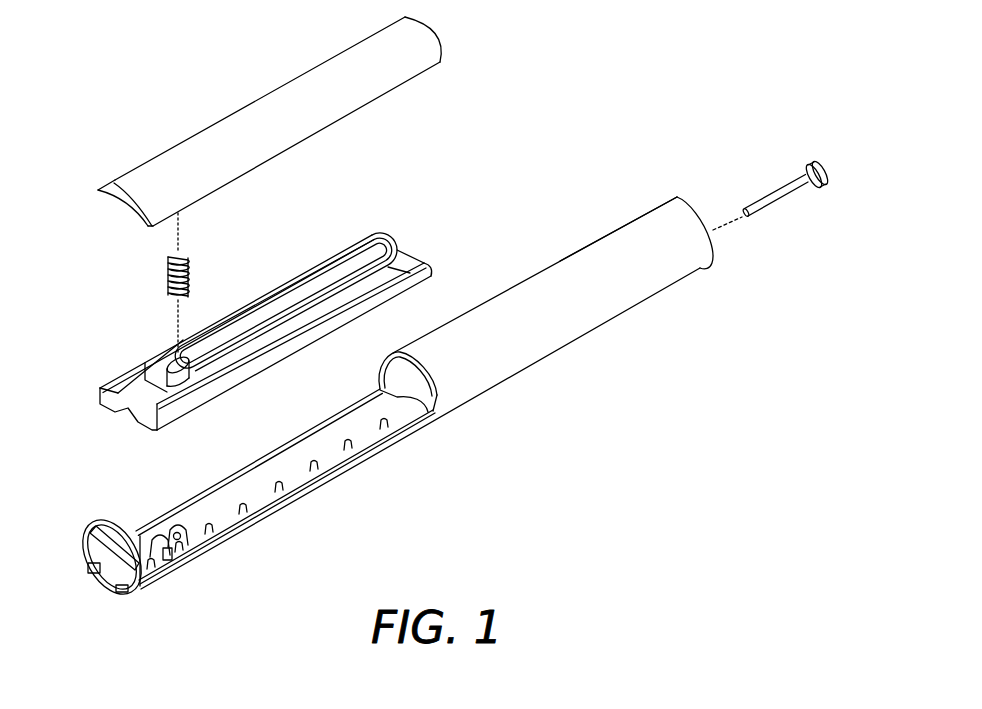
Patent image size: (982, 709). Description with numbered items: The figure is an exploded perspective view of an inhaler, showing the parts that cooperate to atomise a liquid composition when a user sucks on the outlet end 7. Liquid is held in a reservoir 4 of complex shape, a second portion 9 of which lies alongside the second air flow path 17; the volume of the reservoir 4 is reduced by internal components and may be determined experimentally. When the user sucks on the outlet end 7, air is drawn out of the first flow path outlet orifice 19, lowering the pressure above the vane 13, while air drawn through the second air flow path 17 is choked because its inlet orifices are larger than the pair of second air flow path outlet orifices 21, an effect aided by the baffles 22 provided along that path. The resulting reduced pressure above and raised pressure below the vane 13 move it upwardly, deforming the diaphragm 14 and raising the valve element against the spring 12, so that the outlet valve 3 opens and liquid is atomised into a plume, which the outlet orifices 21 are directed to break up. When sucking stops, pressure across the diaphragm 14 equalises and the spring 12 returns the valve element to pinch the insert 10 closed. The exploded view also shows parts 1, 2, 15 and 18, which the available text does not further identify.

The tubular housing 1 is at (490, 377).
The outer sleeve 2 is at (602, 242).
The outlet valve 3 is at (319, 503).
The reservoir 4 is at (695, 203).
The outlet end 7 is at (122, 593).
The second portion of the reservoir 9 is at (225, 543).
The insert 10 is at (781, 197).
The spring 12 is at (163, 278).
The vane 13 is at (220, 364).
The diaphragm 14 is at (370, 298).
The slot 15 is at (388, 243).
The second air flow path 17 is at (310, 440).
The cover 18 is at (273, 97).
The first flow path outlet orifice 19 is at (113, 522).
The second air flow path outlet orifices 21 is at (92, 567).
The baffles 22 is at (280, 515).